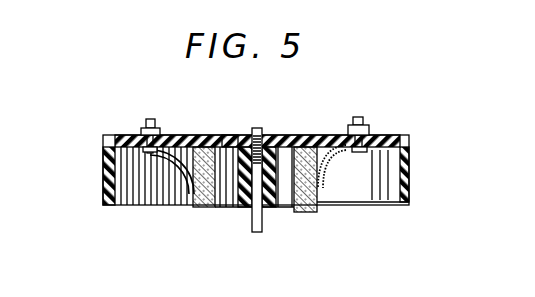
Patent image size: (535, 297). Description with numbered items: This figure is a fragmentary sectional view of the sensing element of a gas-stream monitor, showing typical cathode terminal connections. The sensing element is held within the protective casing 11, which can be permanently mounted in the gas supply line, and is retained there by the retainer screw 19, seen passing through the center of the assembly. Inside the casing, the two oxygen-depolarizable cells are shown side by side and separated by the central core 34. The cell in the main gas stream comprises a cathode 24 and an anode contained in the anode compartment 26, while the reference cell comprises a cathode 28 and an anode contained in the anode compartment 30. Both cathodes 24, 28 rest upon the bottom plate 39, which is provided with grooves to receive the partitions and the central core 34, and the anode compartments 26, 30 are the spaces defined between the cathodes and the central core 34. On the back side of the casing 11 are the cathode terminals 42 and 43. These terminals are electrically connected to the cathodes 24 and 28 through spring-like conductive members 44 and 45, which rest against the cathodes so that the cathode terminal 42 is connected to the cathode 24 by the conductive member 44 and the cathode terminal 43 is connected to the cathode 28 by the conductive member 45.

The protective casing 11 is at (104, 158).
The retainer screw 19 is at (255, 232).
The cathode 24 is at (198, 205).
The anode compartment 26 is at (198, 213).
The cathode 28 is at (323, 210).
The anode compartment 30 is at (284, 213).
The central core 34 is at (247, 213).
The bottom plate 39 is at (232, 136).
The cathode terminal 42 is at (150, 119).
The cathode terminal 43 is at (361, 118).
The spring-like conductive member 44 is at (190, 135).
The spring-like conductive member 45 is at (334, 143).